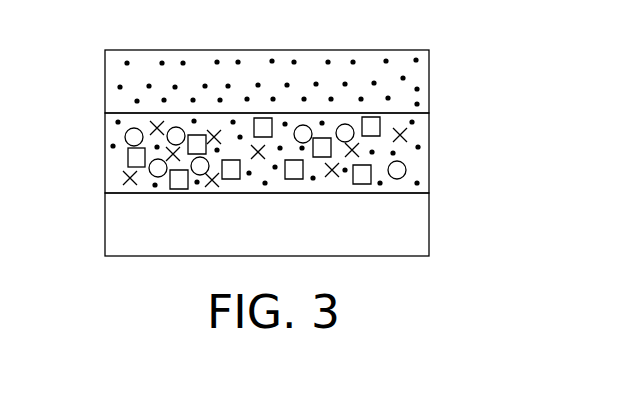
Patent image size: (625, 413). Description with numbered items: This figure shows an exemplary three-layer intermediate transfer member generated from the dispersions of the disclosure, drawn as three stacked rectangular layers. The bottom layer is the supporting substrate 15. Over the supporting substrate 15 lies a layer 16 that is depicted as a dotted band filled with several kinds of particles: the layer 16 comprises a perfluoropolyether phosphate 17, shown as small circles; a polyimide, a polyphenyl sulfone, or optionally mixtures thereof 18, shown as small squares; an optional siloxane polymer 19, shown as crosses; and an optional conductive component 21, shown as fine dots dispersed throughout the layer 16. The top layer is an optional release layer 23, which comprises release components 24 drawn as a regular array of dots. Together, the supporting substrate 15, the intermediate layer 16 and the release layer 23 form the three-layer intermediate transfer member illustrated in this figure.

The supporting substrate 15 is at (105, 222).
The layer 16 is at (105, 148).
The perfluoropolyether phosphate 17 is at (406, 170).
The polyimide, polyphenyl sulfone, or mixtures thereof 18 is at (128, 159).
The siloxane polymer 19 is at (398, 138).
The conductive component 21 is at (421, 148).
The release layer 23 is at (429, 75).
The release components 24 is at (162, 62).